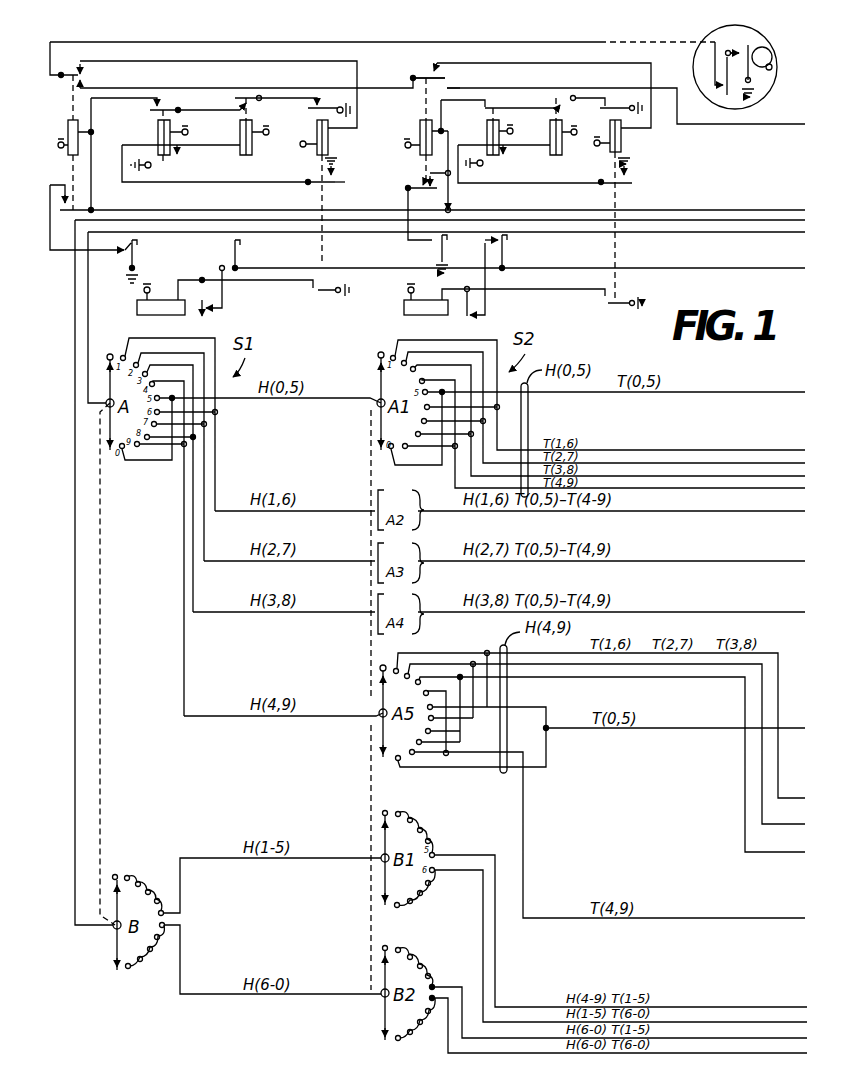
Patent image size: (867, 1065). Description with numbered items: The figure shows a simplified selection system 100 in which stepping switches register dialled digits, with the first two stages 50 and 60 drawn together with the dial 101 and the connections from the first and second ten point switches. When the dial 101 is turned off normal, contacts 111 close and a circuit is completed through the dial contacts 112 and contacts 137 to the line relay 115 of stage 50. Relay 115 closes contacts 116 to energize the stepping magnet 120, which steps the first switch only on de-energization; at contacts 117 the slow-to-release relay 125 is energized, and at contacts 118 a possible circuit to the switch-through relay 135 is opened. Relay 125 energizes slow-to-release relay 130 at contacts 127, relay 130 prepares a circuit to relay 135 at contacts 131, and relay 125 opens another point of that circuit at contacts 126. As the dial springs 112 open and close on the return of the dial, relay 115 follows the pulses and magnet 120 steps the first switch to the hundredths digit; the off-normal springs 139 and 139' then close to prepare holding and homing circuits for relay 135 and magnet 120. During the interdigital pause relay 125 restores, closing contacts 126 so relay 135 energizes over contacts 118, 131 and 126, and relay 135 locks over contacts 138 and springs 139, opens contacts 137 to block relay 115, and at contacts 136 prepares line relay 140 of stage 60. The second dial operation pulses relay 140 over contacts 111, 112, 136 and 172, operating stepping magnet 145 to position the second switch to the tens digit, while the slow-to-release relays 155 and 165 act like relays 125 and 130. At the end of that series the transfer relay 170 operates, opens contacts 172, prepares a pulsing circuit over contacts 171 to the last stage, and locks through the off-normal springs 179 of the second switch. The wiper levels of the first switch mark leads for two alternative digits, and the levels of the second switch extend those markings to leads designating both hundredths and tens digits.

The stage 50 is at (325, 112).
The stage 60 is at (619, 69).
The selection system 100 is at (652, 206).
The dial 101 is at (720, 30).
The contacts 111 is at (742, 45).
The dial contacts 112 is at (722, 83).
The line relay 115 is at (328, 140).
The contacts 116 is at (311, 285).
The contacts 117 is at (337, 182).
The contacts 118 is at (335, 88).
The stepping magnet 120 is at (137, 309).
The slow-to-release relay 125 is at (158, 128).
The contacts 126 is at (158, 109).
The contacts 127 is at (170, 160).
The slow-to-release relay 130 is at (245, 156).
The contacts 131 is at (240, 104).
The switch-through relay 135 is at (67, 128).
The contacts 136 is at (86, 80).
The contacts 137 is at (79, 65).
The contacts 138 is at (60, 211).
The off-normal spring 139 is at (115, 261).
The off-normal spring 139' is at (492, 272).
The line relay 140 is at (622, 145).
The stepping magnet 145 is at (404, 308).
The slow-to-release relay 155 is at (487, 130).
The slow-to-release relay 165 is at (552, 156).
The transfer relay 170 is at (421, 125).
The contacts 171 is at (438, 78).
The contacts 172 is at (432, 75).
The off-normal springs 179 is at (435, 242).